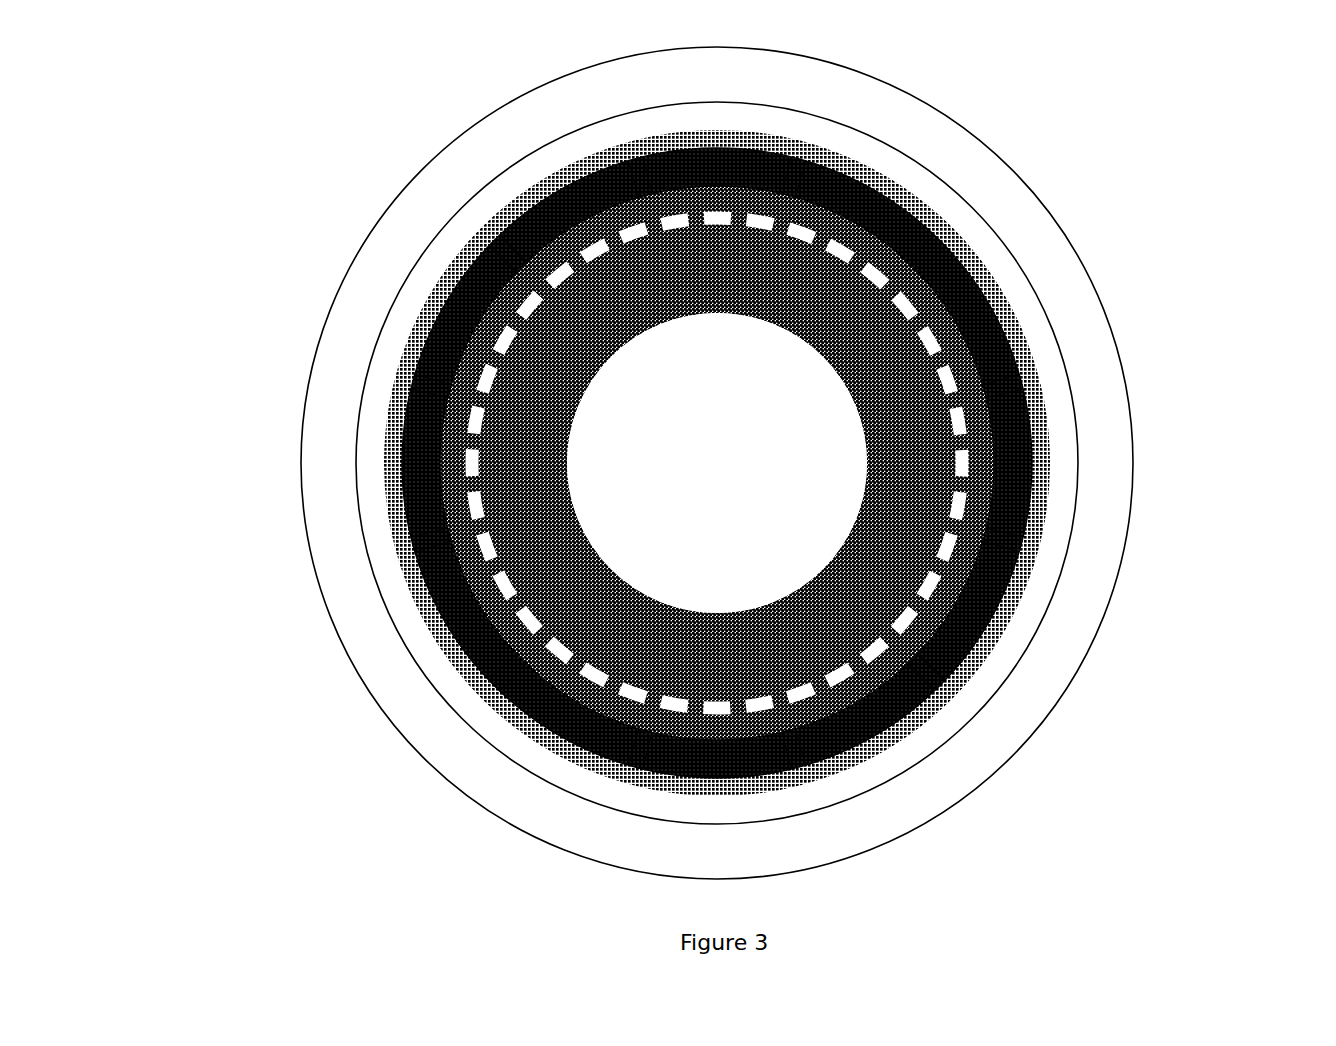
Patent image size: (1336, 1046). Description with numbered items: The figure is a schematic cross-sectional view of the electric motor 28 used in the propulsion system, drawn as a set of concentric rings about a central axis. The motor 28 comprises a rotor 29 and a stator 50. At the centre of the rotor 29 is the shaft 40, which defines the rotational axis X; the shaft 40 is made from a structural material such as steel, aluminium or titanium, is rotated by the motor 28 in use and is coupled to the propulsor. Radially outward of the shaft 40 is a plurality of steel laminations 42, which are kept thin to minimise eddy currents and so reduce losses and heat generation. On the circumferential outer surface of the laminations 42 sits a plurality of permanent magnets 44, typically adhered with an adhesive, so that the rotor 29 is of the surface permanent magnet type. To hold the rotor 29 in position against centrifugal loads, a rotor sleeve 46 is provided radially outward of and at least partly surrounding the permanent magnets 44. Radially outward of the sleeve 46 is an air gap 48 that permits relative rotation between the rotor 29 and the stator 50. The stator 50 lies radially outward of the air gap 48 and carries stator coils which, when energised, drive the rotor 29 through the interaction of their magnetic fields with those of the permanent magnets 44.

The electric motor 28 is at (702, 461).
The rotor 29 is at (592, 294).
The shaft 40 is at (483, 437).
The steel laminations 42 is at (483, 595).
The permanent magnets 44 is at (977, 625).
The rotor sleeve 46 is at (1042, 500).
The air gap 48 is at (1052, 380).
The stator 50 is at (920, 107).
The rotational axis X is at (717, 470).